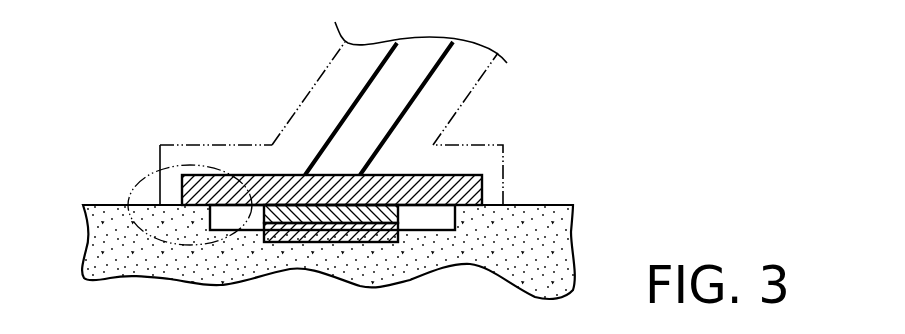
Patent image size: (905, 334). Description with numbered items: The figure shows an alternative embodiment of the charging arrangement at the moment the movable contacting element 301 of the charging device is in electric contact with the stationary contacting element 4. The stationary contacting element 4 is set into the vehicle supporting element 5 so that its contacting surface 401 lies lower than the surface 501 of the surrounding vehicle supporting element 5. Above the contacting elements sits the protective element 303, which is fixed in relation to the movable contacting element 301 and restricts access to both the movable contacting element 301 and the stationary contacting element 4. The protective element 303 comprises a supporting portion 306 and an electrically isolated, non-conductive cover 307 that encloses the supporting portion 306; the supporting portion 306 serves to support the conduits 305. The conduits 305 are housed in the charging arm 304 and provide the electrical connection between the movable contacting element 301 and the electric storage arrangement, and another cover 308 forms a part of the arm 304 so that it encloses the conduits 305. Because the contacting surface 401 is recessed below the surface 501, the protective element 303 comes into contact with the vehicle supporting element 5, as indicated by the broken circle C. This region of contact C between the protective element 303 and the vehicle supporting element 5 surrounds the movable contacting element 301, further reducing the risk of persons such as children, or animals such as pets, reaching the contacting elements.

The vehicle supporting element 5 is at (540, 205).
The surface of the vehicle supporting element 501 is at (522, 205).
The contacting surface 401 is at (396, 219).
The stationary contacting element 4 is at (290, 233).
The movable contacting element 301 is at (363, 215).
The supporting portion 306 is at (181, 204).
The region of contact C is at (180, 247).
The conduits 305 is at (363, 87).
The charging arm 304 is at (290, 120).
The cover 307 is at (207, 145).
The protective element 303 is at (160, 157).
The cover 308 is at (465, 100).